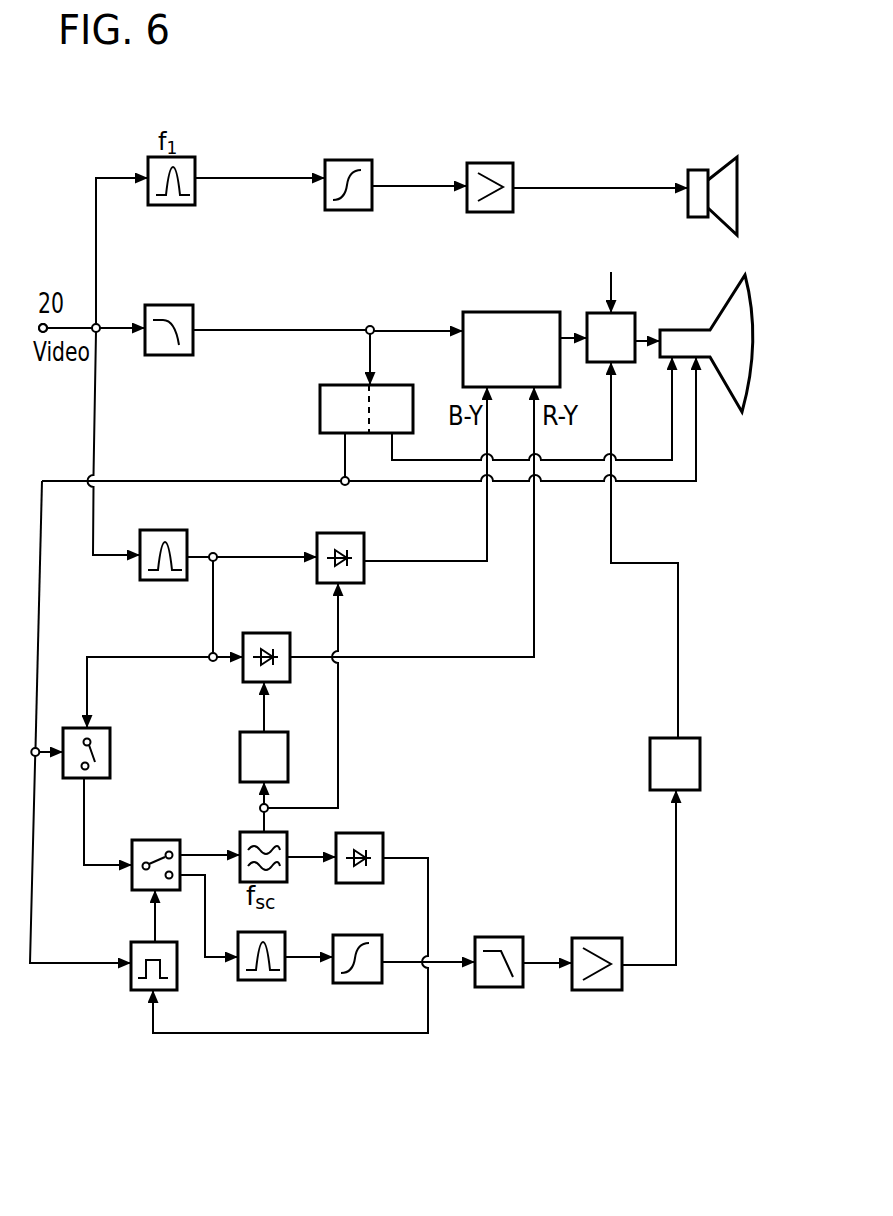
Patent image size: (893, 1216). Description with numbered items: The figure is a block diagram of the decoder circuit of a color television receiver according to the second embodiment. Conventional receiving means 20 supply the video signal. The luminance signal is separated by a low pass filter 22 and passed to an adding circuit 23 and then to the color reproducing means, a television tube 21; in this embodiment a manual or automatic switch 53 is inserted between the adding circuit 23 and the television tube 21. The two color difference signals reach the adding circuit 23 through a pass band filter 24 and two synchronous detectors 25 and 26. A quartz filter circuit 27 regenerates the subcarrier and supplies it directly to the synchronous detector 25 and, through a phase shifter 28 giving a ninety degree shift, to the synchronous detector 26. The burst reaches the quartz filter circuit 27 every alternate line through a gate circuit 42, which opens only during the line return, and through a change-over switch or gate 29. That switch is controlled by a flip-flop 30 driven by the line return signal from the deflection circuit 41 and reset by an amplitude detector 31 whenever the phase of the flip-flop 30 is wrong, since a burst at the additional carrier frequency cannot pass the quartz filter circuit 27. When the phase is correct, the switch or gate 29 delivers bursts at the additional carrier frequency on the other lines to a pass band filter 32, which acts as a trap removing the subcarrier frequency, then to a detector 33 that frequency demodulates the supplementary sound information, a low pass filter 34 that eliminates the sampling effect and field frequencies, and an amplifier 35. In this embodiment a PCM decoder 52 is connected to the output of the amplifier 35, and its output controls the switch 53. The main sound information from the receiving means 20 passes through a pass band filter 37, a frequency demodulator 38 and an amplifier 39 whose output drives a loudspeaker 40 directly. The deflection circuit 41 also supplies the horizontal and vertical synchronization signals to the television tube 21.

The receiving means 20 is at (51, 309).
The television tube 21 is at (685, 340).
The low pass filter 22 is at (180, 310).
The adding circuit 23 is at (475, 325).
The pass band filter 24 is at (175, 540).
The synchronous detector 25 is at (355, 548).
The synchronous detector 26 is at (288, 640).
The quartz filter circuit 27 is at (283, 842).
The phase shifter 28 is at (282, 756).
The change-over switch or gate 29 is at (165, 845).
The flip-flop 30 is at (174, 968).
The amplitude detector 31 is at (378, 845).
The pass band filter 32 is at (278, 940).
The detector 33 is at (376, 948).
The low pass filter 34 is at (520, 945).
The amplifier 35 is at (618, 940).
The pass band filter 37 is at (186, 167).
The frequency demodulator 38 is at (365, 172).
The amplifier 39 is at (510, 178).
The loudspeaker 40 is at (693, 185).
The deflection circuit 41 is at (381, 433).
The gate circuit 42 is at (102, 744).
The PCM decoder 52 is at (683, 743).
The manual or automatic switch 53 is at (622, 325).